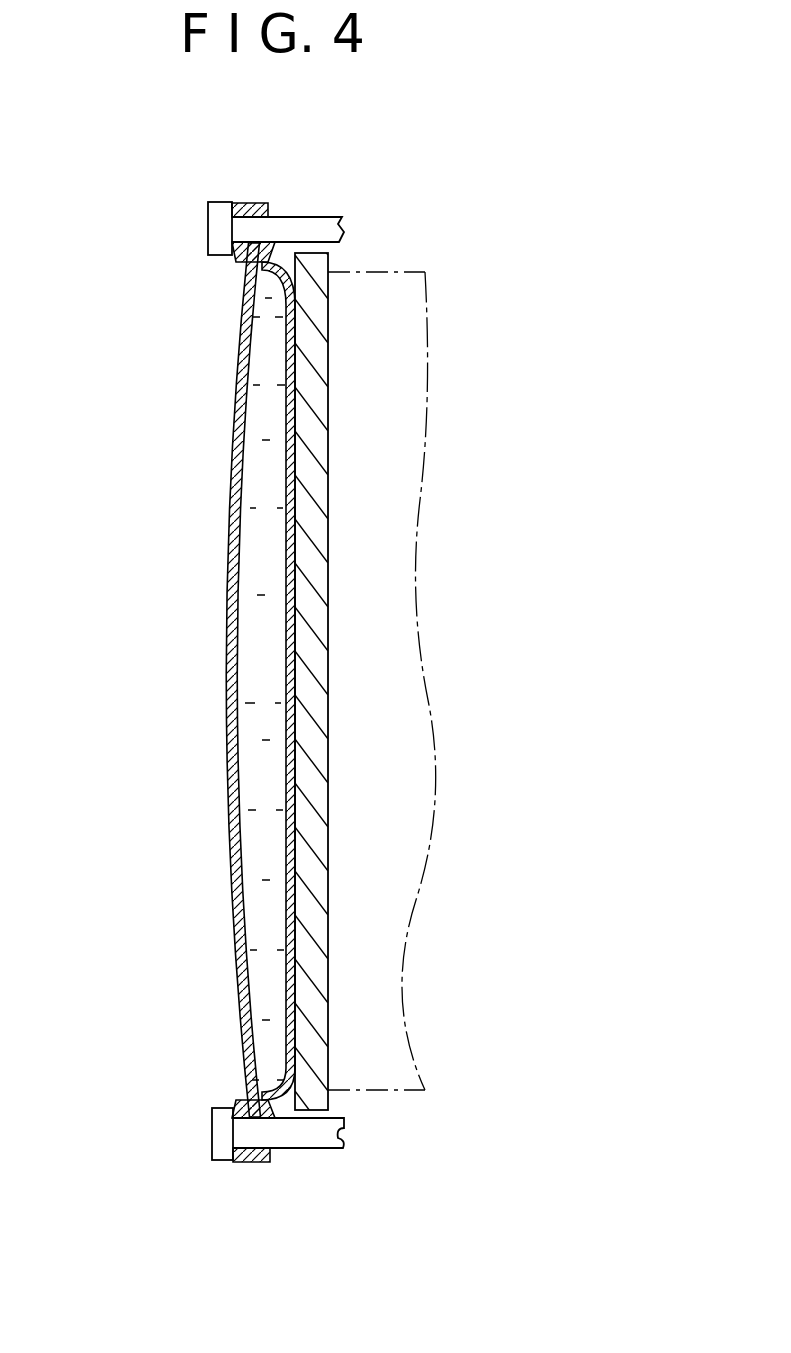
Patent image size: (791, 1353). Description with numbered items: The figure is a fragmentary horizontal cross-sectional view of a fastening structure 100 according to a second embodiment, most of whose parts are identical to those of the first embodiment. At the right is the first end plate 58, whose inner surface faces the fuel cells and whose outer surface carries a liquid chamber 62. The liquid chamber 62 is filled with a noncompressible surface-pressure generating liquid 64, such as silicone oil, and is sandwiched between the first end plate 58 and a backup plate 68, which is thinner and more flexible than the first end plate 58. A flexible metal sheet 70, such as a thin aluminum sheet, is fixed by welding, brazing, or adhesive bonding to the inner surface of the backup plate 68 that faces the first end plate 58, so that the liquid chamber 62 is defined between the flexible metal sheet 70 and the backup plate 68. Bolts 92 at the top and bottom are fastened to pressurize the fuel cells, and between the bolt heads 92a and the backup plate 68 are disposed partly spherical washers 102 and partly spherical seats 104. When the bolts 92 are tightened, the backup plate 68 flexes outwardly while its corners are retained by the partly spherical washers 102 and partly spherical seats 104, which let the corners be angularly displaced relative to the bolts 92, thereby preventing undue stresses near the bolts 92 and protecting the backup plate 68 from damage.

The fastening structure 100 is at (422, 133).
The first end plate 58 is at (337, 263).
The liquid chamber 62 is at (191, 680).
The surface-pressure generating liquid 64 is at (191, 680).
The backup plate 68 is at (258, 412).
The flexible metal sheet 70 is at (287, 782).
The bolts 92 is at (306, 230).
The bolt heads 92a is at (207, 228).
The partly spherical washers 102 is at (248, 205).
The partly spherical seats 104 is at (237, 204).